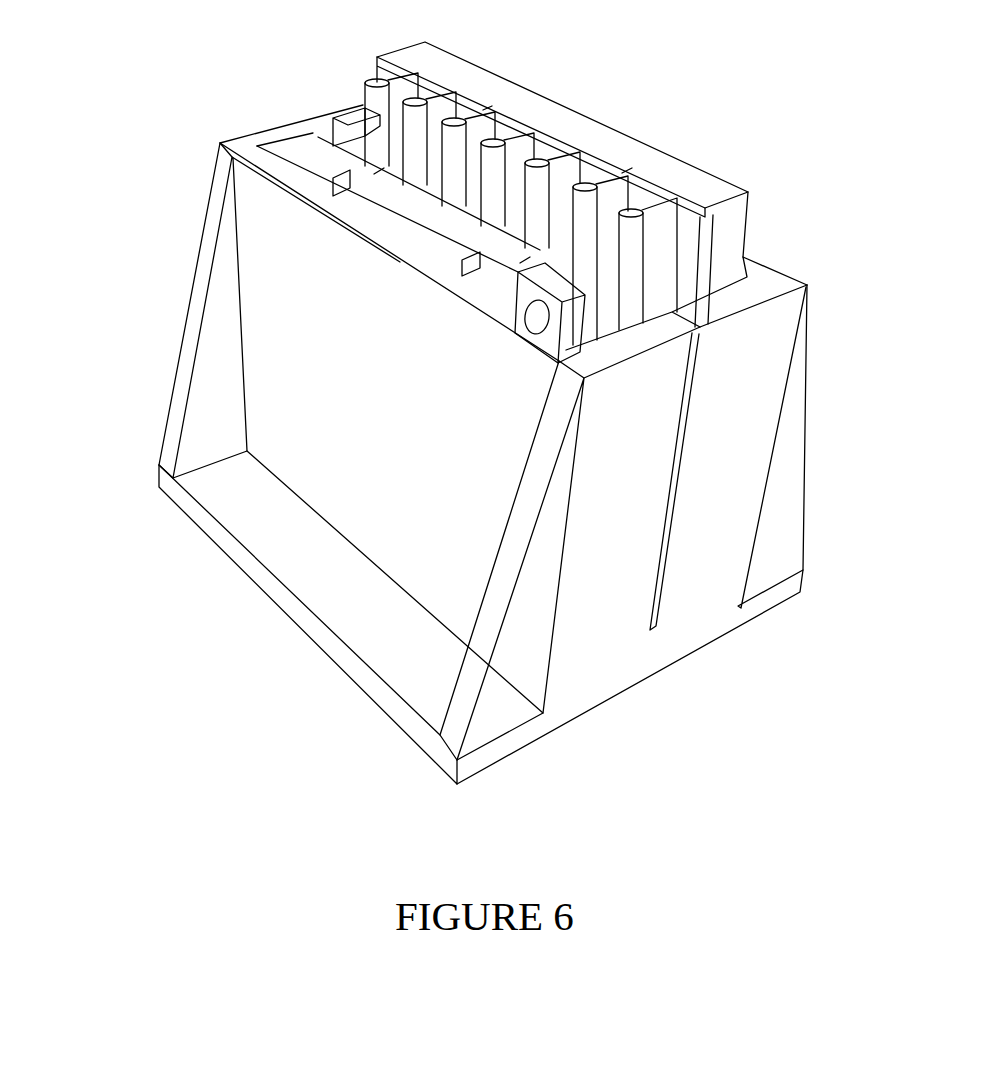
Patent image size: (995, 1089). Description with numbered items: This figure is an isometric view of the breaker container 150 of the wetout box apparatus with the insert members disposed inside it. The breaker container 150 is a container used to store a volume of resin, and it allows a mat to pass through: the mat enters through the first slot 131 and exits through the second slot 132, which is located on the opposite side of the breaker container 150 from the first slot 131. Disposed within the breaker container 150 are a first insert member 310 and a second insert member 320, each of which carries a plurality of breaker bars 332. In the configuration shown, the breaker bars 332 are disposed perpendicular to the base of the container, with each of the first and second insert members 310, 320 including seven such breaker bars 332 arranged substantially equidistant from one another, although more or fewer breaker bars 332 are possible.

The breaker container 150 is at (166, 318).
The first slot 131 is at (330, 122).
The second slot 132 is at (688, 452).
The first insert member 310 is at (596, 108).
The second insert member 320 is at (372, 236).
The breaker bars 332 is at (494, 103).